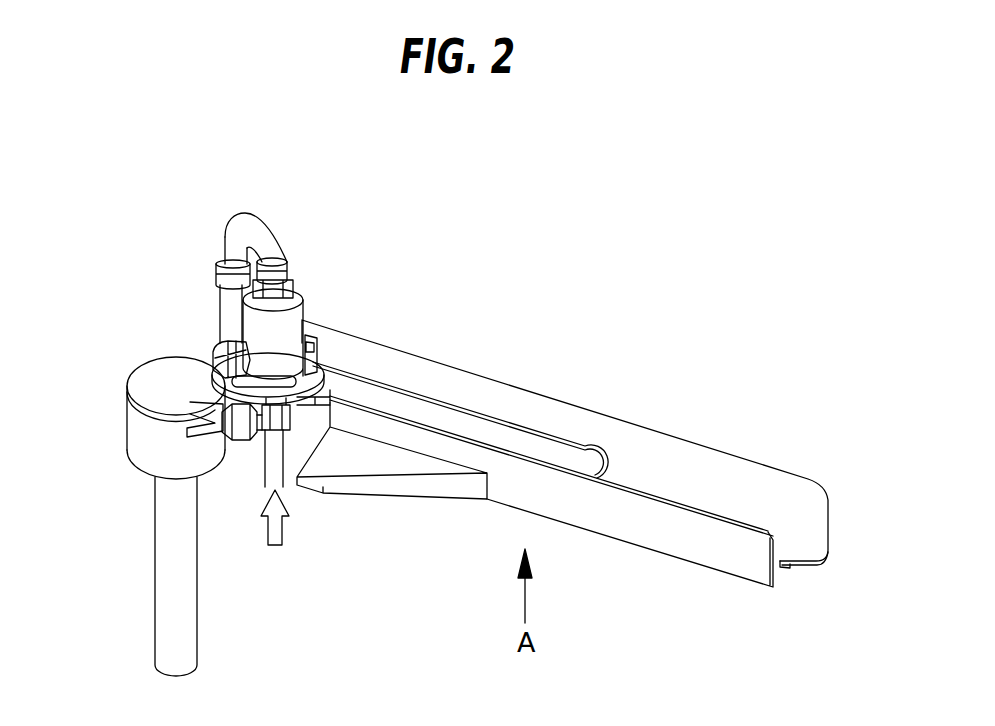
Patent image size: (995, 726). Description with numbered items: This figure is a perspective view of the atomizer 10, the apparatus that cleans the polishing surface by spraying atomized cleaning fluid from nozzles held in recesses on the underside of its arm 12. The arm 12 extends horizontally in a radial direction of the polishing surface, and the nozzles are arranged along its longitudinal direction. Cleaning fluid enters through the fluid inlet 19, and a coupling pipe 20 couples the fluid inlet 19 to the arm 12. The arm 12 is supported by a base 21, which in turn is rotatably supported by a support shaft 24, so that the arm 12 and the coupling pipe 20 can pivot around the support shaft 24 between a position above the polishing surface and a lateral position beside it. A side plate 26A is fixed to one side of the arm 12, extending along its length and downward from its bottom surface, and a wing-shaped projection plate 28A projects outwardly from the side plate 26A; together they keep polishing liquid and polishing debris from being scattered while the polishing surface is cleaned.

The atomizer 10 is at (562, 411).
The arm 12 is at (630, 446).
The fluid inlet 19 is at (264, 462).
The coupling pipe 20 is at (246, 214).
The base 21 is at (215, 348).
The support shaft 24 is at (153, 587).
The side plate 26A is at (650, 518).
The projection plate 28A is at (403, 490).